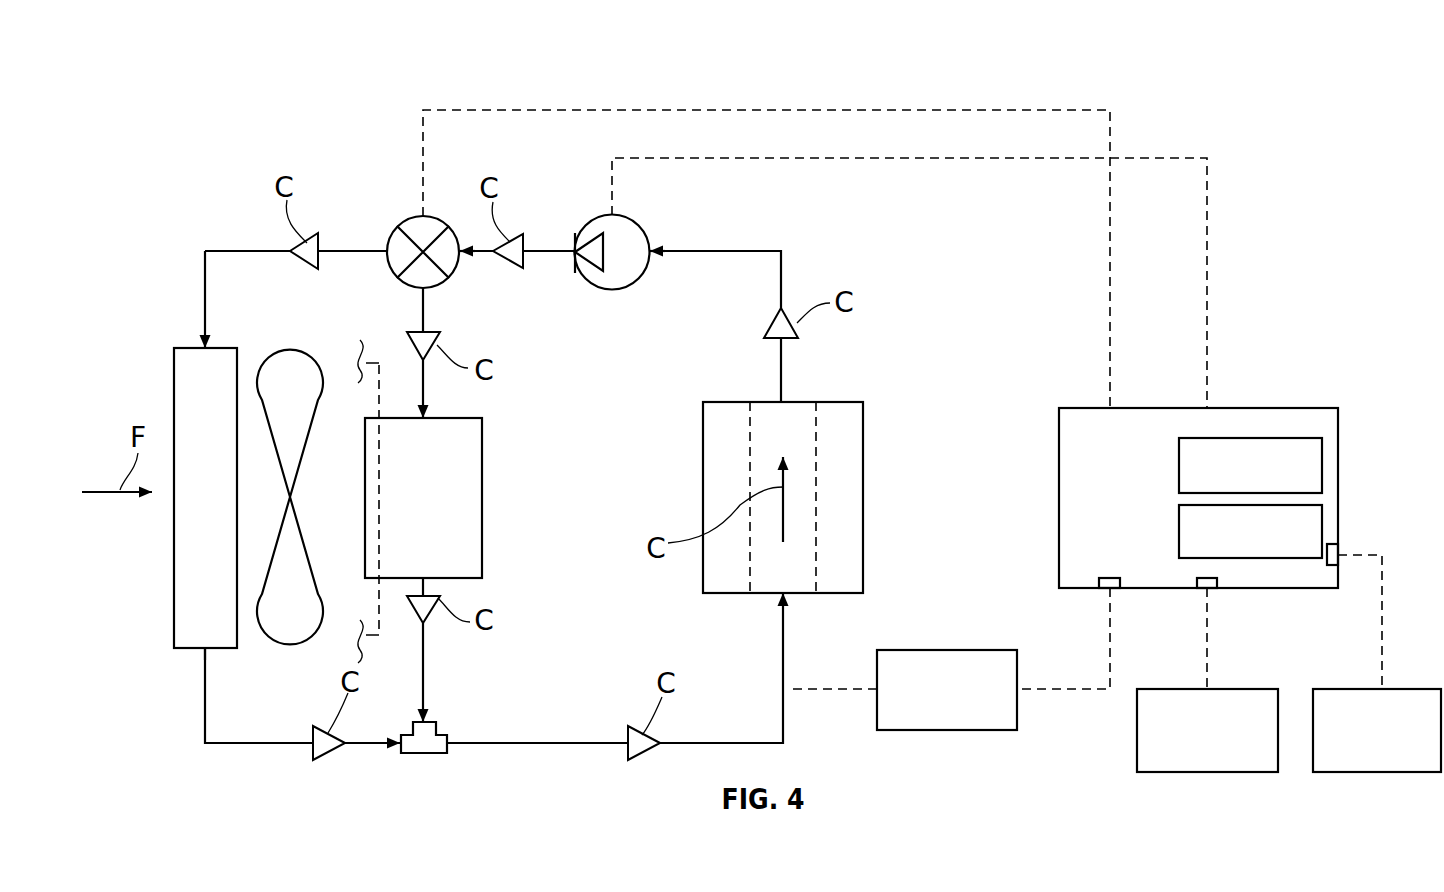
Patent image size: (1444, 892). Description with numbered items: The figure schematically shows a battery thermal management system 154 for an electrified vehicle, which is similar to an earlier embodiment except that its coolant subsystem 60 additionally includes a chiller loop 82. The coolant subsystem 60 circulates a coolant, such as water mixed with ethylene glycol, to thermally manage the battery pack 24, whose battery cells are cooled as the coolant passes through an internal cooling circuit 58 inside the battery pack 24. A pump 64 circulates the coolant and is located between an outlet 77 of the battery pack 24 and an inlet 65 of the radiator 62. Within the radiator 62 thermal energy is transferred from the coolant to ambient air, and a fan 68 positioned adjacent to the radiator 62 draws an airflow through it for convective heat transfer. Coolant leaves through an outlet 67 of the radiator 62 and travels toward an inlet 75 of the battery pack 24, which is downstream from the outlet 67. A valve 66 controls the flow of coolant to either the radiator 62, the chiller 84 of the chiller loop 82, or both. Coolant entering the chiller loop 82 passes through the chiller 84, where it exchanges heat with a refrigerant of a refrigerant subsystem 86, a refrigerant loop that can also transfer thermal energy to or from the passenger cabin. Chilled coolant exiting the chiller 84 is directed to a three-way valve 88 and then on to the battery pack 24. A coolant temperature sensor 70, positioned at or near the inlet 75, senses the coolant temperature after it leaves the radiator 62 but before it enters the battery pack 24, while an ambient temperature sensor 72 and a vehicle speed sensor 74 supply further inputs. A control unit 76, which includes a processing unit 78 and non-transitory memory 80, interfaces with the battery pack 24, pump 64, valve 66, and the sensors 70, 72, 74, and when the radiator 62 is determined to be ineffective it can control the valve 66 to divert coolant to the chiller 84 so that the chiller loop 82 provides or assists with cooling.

The battery thermal management system 154 is at (183, 87).
The inlet of the radiator 65 is at (180, 337).
The fan 68 is at (278, 370).
The valve 66 is at (440, 285).
The pump 64 is at (613, 290).
The outlet of the battery pack 77 is at (822, 388).
The battery pack 24 is at (848, 400).
The internal cooling circuit 58 is at (817, 522).
The control unit 76 is at (1303, 407).
The processing unit 78 is at (1323, 462).
The non-transitory memory 80 is at (1323, 525).
The chiller loop 82 is at (468, 402).
The chiller 84 is at (483, 477).
The radiator 62 is at (172, 598).
The outlet of the radiator 67 is at (187, 655).
The coolant subsystem 60 is at (257, 748).
The refrigerant subsystem 86 is at (373, 657).
The three-way valve 88 is at (428, 757).
The inlet of the battery pack 75 is at (748, 607).
The coolant temperature sensor 70 is at (940, 650).
The ambient temperature sensor 72 is at (1185, 689).
The vehicle speed sensor 74 is at (1360, 689).